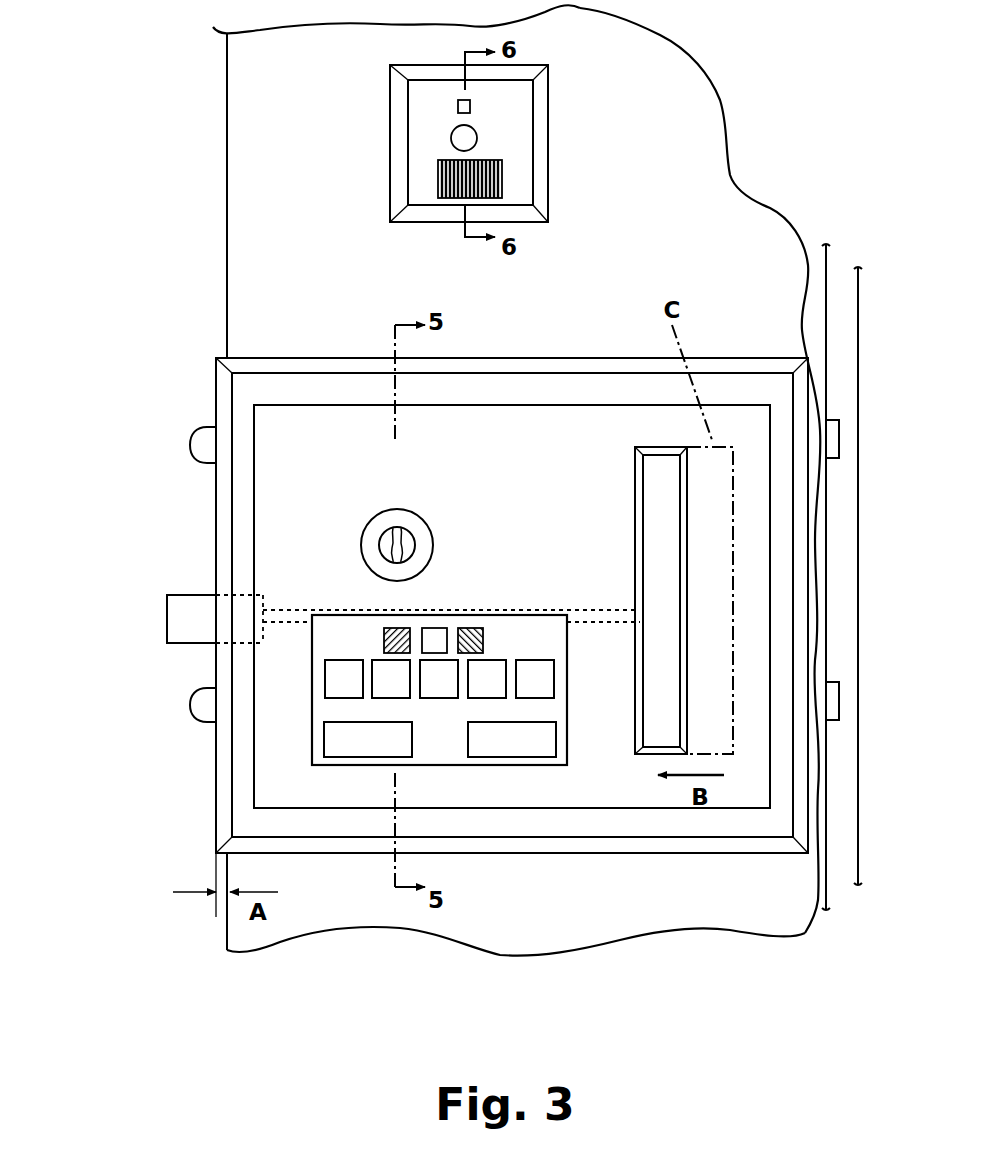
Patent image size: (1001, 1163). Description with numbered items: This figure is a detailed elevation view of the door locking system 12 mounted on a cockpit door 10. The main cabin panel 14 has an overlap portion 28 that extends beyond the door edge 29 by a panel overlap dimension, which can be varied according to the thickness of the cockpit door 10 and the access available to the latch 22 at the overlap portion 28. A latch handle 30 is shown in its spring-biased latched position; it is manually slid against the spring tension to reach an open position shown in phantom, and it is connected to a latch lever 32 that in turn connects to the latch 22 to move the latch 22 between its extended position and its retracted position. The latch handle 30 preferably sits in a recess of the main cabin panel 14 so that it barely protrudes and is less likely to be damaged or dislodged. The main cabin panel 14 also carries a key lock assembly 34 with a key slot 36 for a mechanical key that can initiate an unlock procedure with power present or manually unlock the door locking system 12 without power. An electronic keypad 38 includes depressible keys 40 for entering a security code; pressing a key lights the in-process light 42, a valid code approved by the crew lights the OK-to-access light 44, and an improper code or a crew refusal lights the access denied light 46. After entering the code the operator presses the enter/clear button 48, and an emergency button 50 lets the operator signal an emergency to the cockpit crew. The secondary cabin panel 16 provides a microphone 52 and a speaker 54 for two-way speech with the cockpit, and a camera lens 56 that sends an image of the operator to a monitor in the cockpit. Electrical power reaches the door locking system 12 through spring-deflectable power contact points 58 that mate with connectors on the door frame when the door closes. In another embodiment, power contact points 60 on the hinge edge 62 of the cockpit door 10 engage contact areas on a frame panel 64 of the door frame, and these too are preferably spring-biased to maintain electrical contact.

The cockpit door 10 is at (245, 168).
The door locking system 12 is at (163, 218).
The main cabin panel 14 is at (287, 366).
The secondary cabin panel 16 is at (427, 140).
The latch 22 is at (185, 605).
The overlap portion 28 is at (215, 508).
The door edge 29 is at (227, 930).
The latch handle 30 is at (657, 542).
The latch lever 32 is at (288, 610).
The key lock assembly 34 is at (413, 515).
The key slot 36 is at (390, 533).
The electronic keypad 38 is at (452, 745).
The depressible keys 40 is at (500, 662).
The in-process light 42 is at (440, 627).
The OK-to-access light 44 is at (477, 628).
The access denied light 46 is at (402, 628).
The enter/clear button 48 is at (540, 748).
The emergency button 50 is at (362, 748).
The microphone 52 is at (470, 108).
The speaker 54 is at (447, 195).
The camera lens 56 is at (478, 142).
The power contact points 58 is at (205, 438).
The power contact points 60 is at (836, 436).
The hinge edge 62 is at (830, 265).
The frame panel 64 is at (860, 293).